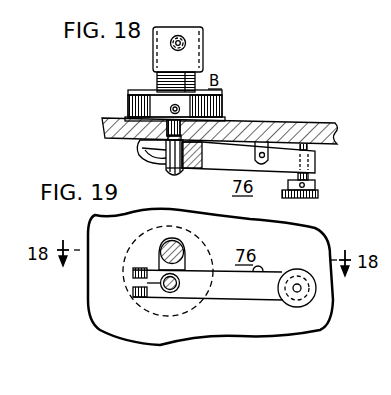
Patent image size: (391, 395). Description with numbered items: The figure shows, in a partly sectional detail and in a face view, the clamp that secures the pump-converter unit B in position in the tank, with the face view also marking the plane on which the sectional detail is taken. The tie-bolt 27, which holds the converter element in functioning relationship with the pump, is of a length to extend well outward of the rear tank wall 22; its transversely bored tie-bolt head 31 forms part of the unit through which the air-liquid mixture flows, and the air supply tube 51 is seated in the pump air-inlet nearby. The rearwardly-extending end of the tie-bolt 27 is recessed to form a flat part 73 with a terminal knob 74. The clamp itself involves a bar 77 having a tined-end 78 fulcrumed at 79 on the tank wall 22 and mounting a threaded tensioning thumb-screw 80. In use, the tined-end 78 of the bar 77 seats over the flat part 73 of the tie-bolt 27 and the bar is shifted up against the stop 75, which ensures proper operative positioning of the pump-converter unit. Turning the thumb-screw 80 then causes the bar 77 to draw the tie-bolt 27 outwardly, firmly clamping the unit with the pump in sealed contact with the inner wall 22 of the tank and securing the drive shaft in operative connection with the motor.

In FIG. 18, the rear tank wall 22 is at (313, 131).
In FIG. 19, the rear tank wall 22 is at (313, 318).
In FIG. 18, the tie-bolt 27 is at (102, 128).
In FIG. 18, the tie-bolt head 31 is at (203, 53).
In FIG. 18, the tube 51 is at (171, 108).
In FIG. 18, the flat part 73 is at (166, 157).
In FIG. 18, the terminal knob 74 is at (171, 177).
In FIG. 19, the terminal knob 74 is at (176, 293).
In FIG. 18, the stop 75 is at (263, 150).
In FIG. 18, the bar 77 is at (210, 152).
In FIG. 19, the bar 77 is at (228, 297).
In FIG. 18, the tined-end 78 is at (150, 152).
In FIG. 19, the tined-end 78 is at (152, 285).
In FIG. 18, the fulcrum 79 is at (139, 143).
In FIG. 19, the fulcrum 79 is at (262, 268).
In FIG. 18, the thumb-screw 80 is at (316, 186).
In FIG. 19, the thumb-screw 80 is at (316, 292).